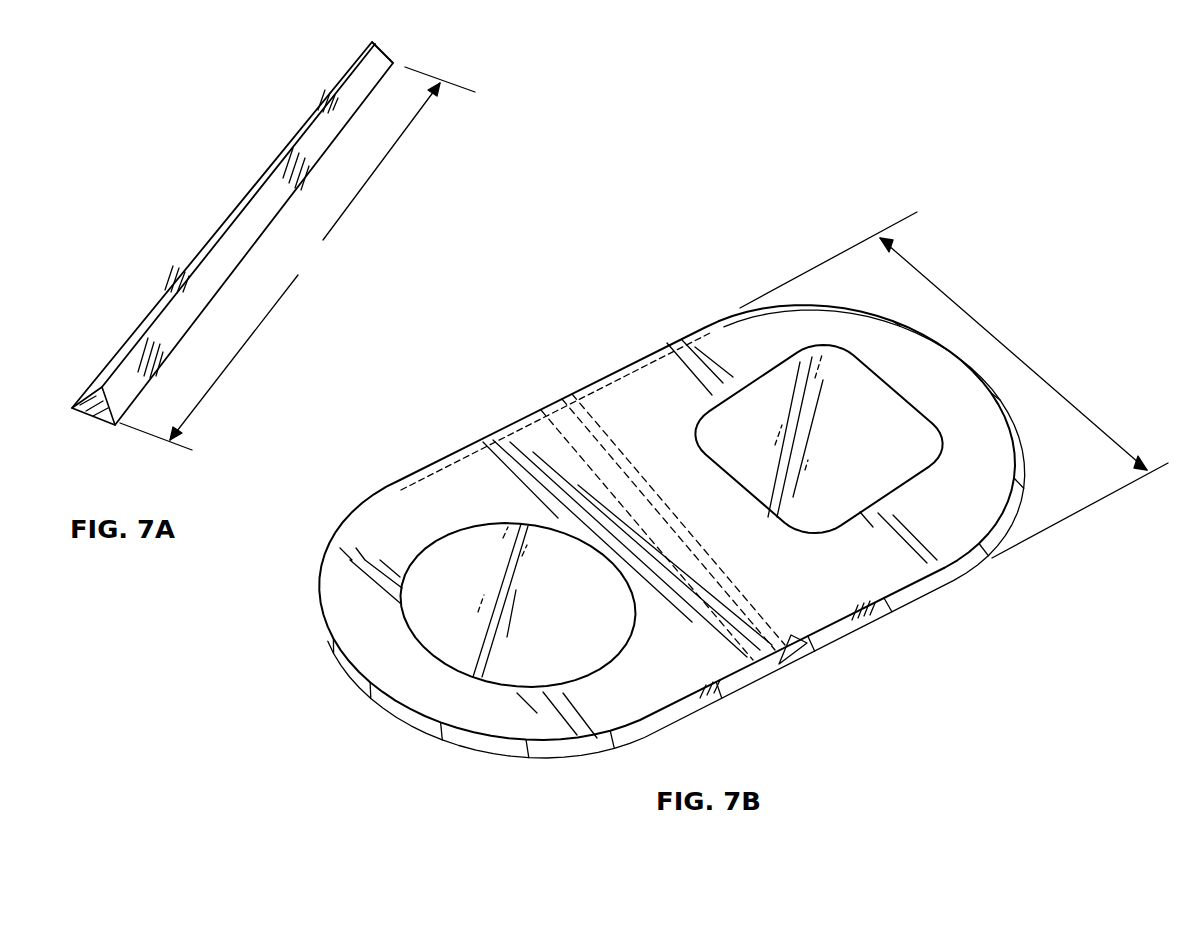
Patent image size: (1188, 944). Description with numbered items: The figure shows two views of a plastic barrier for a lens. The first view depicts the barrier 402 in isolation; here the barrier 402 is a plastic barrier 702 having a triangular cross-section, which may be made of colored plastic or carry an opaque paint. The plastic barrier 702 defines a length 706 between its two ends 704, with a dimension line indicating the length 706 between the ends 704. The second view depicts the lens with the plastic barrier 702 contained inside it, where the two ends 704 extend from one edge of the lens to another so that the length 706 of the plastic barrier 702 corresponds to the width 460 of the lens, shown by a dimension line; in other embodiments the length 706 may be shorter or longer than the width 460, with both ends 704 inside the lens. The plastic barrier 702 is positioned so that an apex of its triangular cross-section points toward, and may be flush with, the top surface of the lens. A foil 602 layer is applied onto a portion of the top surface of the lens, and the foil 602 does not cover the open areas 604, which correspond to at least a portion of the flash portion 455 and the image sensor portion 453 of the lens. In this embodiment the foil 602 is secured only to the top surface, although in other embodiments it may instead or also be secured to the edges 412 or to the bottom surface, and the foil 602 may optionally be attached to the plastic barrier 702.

In FIG. 7A, the barrier 402 is at (237, 93).
In FIG. 7A, the plastic barrier 702 is at (234, 207).
In FIG. 7B, the plastic barrier 702 is at (615, 460).
In FIG. 7A, the ends 704 is at (385, 52).
In FIG. 7A, the length 706 is at (297, 258).
In FIG. 7B, the image sensor portion 453 is at (413, 522).
In FIG. 7B, the flash portion 455 is at (828, 334).
In FIG. 7B, the width 460 is at (954, 385).
In FIG. 7B, the foil 602 is at (837, 590).
In FIG. 7B, the open areas 604 is at (567, 616).
In FIG. 7B, the edges 412 is at (830, 632).